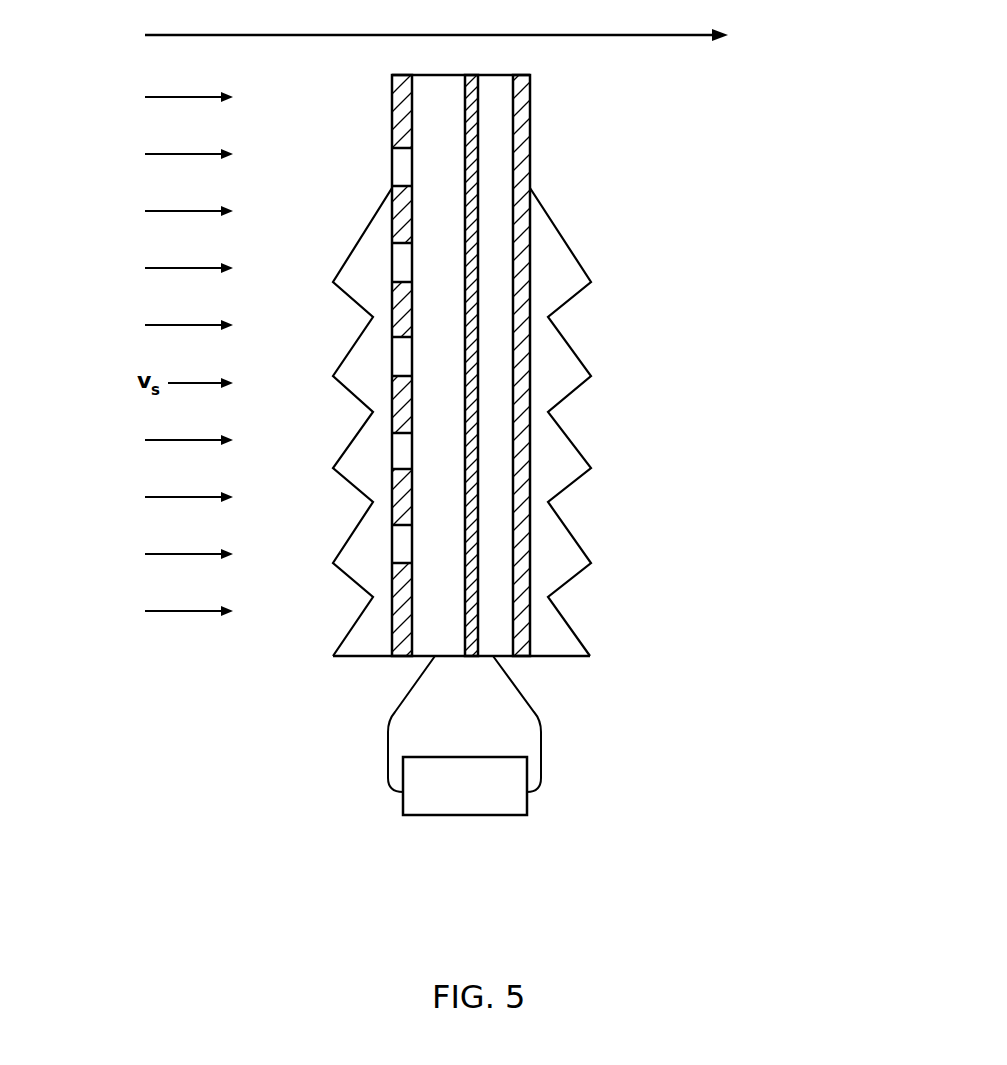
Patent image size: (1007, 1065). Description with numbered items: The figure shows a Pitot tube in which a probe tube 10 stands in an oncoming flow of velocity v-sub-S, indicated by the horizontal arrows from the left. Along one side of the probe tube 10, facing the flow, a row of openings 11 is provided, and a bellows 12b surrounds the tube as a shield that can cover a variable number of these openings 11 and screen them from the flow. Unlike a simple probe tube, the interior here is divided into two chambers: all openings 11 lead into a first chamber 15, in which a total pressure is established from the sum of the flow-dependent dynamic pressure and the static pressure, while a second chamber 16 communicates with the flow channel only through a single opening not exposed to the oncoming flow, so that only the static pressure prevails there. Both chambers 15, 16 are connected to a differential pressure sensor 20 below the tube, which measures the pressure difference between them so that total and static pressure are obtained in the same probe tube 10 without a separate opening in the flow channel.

The probe tube 10 is at (542, 113).
The openings 11 is at (405, 167).
The first chamber 15 is at (450, 169).
The second chamber 16 is at (500, 251).
The bellows 12b is at (582, 542).
The differential pressure sensor 20 is at (503, 815).